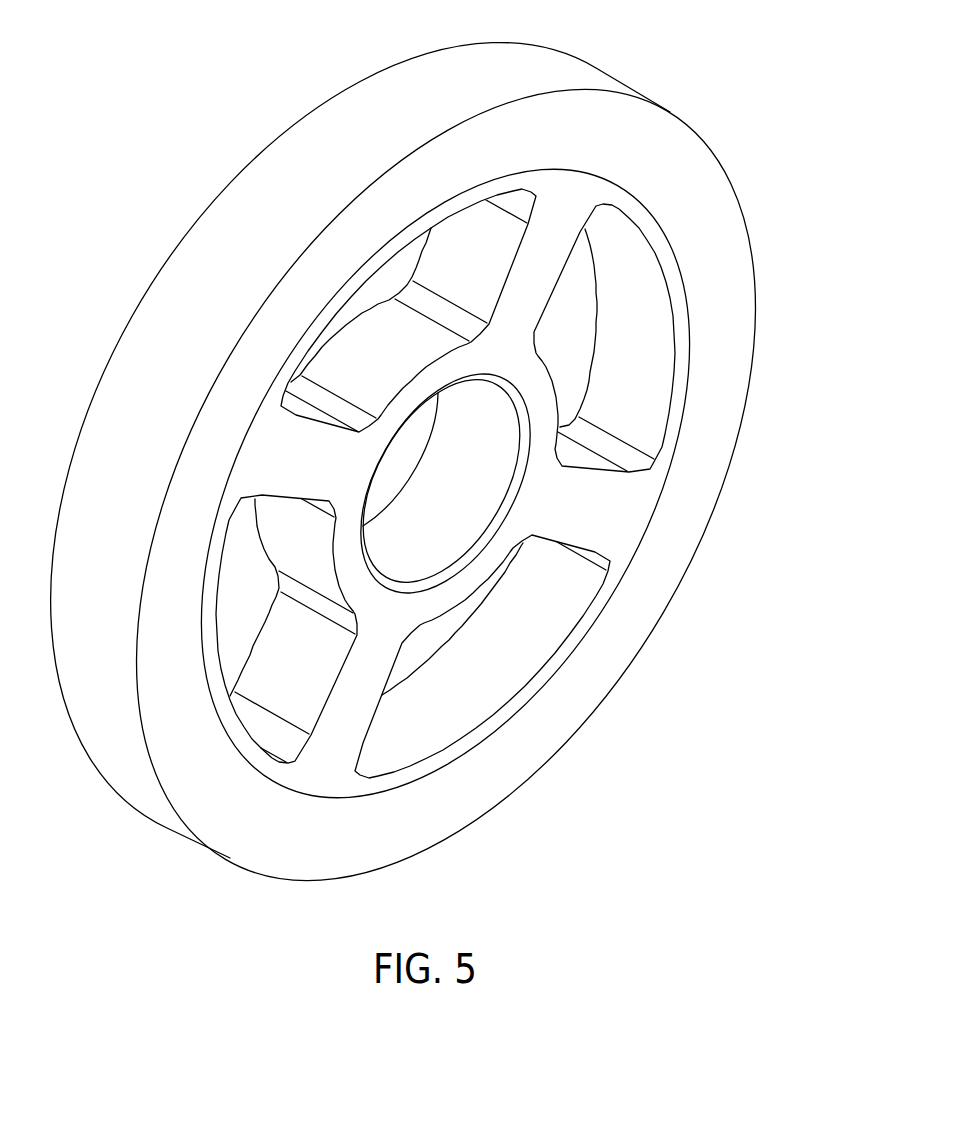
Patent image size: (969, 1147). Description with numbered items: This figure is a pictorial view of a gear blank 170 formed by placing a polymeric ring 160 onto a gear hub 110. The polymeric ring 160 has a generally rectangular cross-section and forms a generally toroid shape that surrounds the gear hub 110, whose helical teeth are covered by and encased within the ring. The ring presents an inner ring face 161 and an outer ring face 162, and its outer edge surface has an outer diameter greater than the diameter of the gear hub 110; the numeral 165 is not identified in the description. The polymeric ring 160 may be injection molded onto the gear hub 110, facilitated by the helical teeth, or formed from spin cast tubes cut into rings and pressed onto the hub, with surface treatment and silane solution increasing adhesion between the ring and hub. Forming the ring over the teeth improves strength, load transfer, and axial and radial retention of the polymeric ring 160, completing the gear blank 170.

The gear blank 170 is at (705, 86).
The polymeric ring 160 is at (668, 193).
The tread 165 is at (200, 240).
The outer ring face 162 is at (585, 685).
The inner ring face 161 is at (695, 348).
The gear hub 110 is at (600, 510).